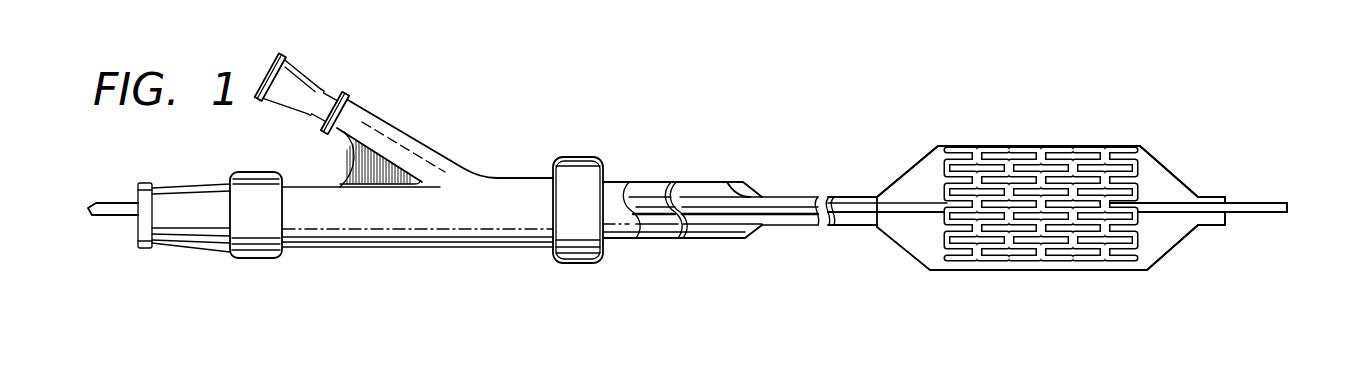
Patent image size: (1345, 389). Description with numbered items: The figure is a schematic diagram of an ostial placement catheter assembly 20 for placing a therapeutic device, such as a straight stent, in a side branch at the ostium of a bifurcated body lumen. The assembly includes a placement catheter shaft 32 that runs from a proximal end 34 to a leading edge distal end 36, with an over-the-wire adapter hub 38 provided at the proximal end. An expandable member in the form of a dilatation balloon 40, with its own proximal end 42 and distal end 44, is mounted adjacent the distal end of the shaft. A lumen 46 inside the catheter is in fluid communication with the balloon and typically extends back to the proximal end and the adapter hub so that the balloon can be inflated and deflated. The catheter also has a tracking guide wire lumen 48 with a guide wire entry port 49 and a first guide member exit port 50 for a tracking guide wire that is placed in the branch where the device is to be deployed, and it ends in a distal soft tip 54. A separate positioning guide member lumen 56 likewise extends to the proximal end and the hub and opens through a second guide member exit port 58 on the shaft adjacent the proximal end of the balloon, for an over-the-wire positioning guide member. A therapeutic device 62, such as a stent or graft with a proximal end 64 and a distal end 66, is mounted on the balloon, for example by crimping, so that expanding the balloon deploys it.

The ostial placement catheter assembly 20 is at (830, 108).
The placement catheter shaft 32 is at (725, 242).
The proximal end 34 is at (442, 247).
The leading edge distal end 36 is at (1253, 203).
The over-the-wire adapter hub 38 is at (256, 260).
The dilatation balloon 40 is at (903, 173).
The proximal end 42 is at (875, 197).
The distal end 44 is at (1185, 238).
The lumen 46 is at (703, 203).
The tracking guide wire lumen 48 is at (793, 203).
The guide wire entry port 49 is at (730, 180).
The first guide member exit port 50 is at (1289, 213).
The distal soft tip 54 is at (1288, 203).
The positioning guide member lumen 56 is at (788, 218).
The second guide member exit port 58 is at (847, 226).
The therapeutic device 62 is at (1067, 269).
The proximal end 64 is at (938, 146).
The distal end 66 is at (1135, 146).